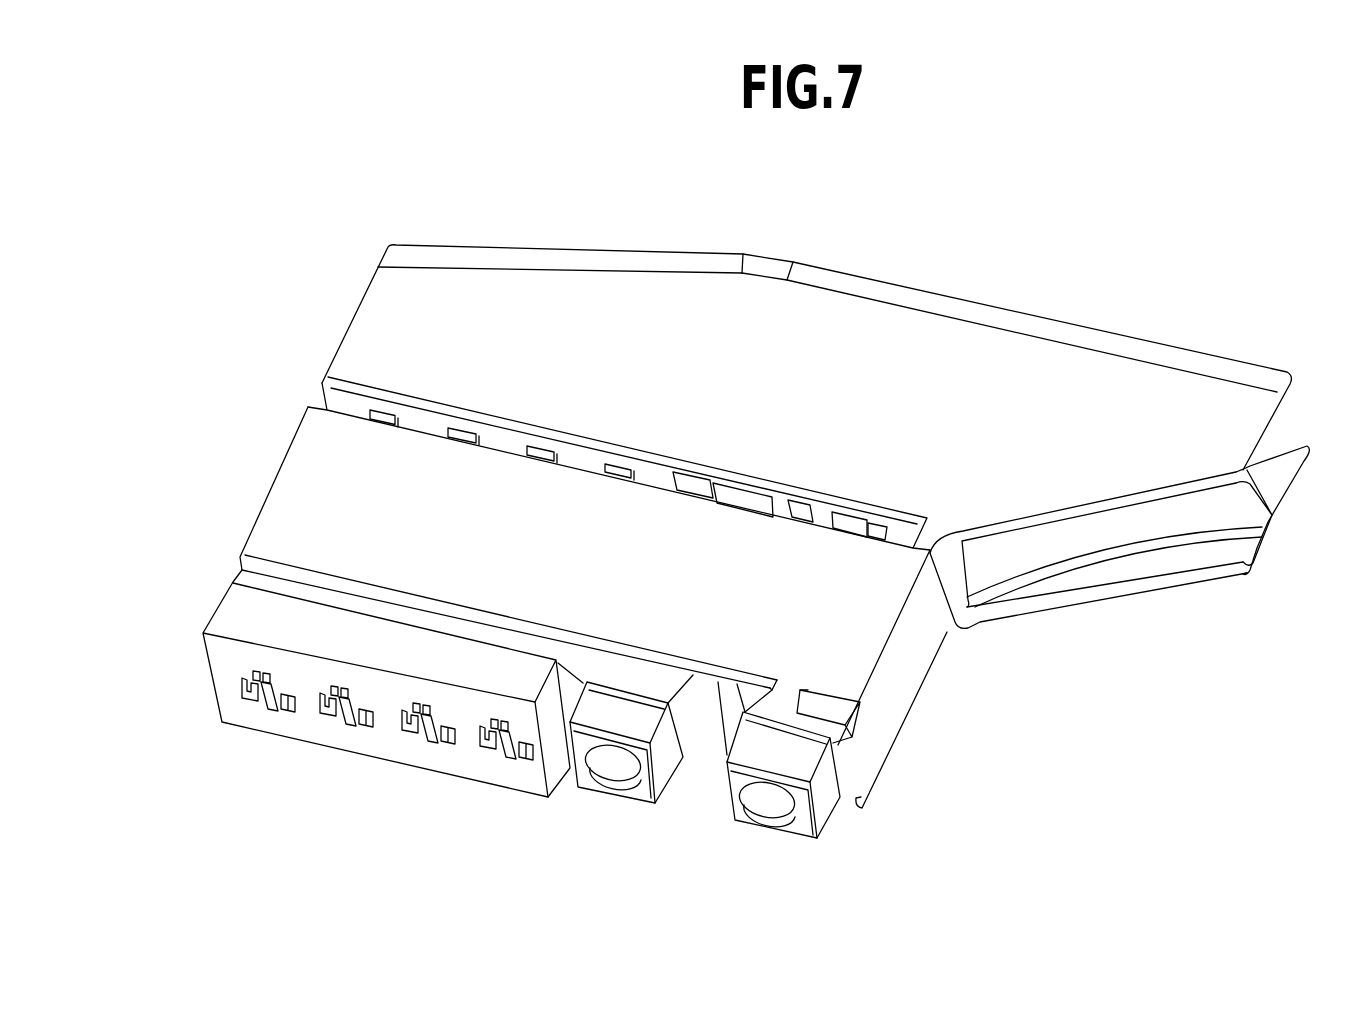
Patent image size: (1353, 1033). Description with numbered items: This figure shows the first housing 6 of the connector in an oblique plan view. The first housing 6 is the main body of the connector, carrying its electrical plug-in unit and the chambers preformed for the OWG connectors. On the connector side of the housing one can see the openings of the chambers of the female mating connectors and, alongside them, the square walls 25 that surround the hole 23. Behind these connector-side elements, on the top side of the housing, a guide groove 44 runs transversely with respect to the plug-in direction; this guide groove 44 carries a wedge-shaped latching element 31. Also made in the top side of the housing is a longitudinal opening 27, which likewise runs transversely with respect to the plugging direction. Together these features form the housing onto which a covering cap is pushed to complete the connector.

The first housing 6 is at (962, 689).
The longitudinal opening 27 is at (317, 400).
The guide groove 44 is at (258, 580).
The square walls 25 is at (620, 713).
The hole 23 is at (607, 795).
The wedge-shaped latching element 31 is at (743, 713).